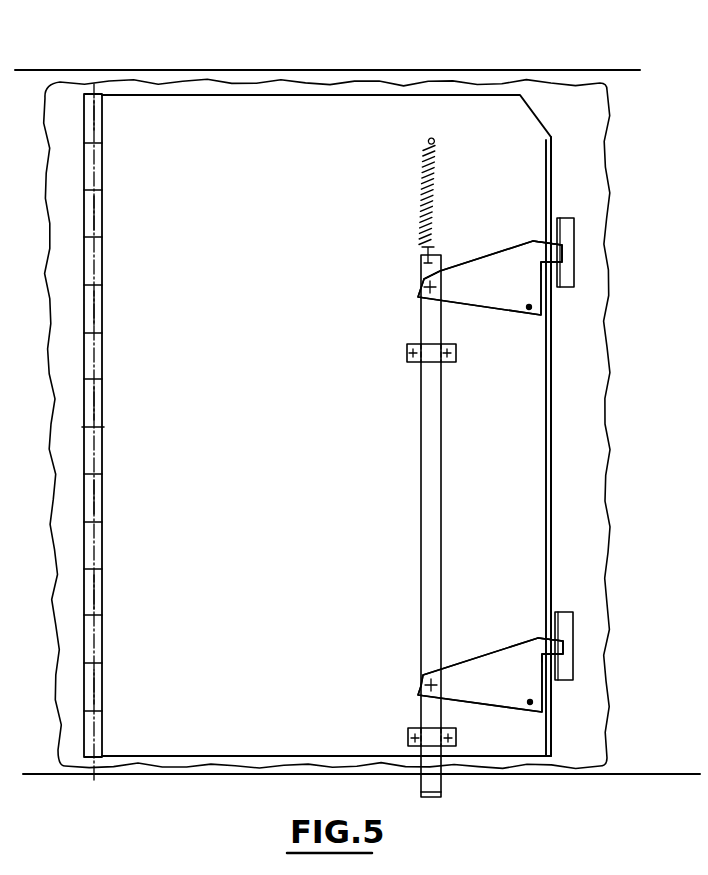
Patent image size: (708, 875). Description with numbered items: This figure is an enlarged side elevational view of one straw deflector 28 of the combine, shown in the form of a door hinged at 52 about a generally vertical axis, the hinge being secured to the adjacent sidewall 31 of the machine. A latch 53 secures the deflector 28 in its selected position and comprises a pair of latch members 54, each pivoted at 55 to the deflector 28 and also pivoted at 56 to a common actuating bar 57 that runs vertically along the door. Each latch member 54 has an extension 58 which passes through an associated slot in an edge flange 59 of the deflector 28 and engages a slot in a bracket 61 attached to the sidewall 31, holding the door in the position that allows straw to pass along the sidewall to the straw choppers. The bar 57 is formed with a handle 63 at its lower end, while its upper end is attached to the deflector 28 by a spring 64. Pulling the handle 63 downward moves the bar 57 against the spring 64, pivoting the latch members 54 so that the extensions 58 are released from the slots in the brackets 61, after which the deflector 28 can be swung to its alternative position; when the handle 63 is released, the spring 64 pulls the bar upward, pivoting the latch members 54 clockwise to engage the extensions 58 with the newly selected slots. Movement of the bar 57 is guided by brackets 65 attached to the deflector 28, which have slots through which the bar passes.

The deflector 28 is at (255, 408).
The sidewall 31 is at (610, 68).
The hinge 52 is at (103, 225).
The latch 53 is at (488, 310).
The latch member 54 is at (481, 268).
The pivot 55 is at (529, 307).
The pivot 56 is at (425, 285).
The actuating bar 57 is at (433, 563).
The extension 58 is at (540, 253).
The edge flange 59 is at (547, 497).
The bracket 61 is at (575, 252).
The handle 63 is at (437, 797).
The spring 64 is at (433, 170).
The bracket 65 is at (407, 346).